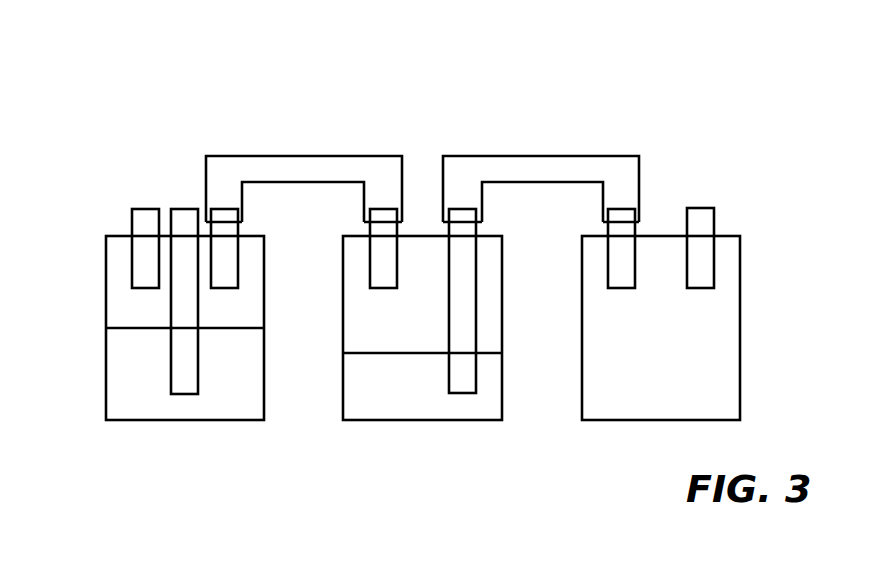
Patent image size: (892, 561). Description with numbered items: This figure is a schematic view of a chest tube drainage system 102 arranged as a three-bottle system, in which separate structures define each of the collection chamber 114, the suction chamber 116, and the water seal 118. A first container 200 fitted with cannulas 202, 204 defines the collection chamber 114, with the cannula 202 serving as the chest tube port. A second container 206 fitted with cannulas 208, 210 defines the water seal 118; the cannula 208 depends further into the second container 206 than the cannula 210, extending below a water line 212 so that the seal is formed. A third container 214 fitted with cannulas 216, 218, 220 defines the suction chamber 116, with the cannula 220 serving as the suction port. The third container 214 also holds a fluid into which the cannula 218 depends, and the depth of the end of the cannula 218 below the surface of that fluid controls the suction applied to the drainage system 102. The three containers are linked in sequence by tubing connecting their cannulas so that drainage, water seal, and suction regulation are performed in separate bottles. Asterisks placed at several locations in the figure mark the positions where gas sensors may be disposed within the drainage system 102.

The chest tube drainage system 102 is at (486, 92).
The collection chamber 114 is at (628, 401).
The suction chamber 116 is at (141, 406).
The water seal 118 is at (393, 401).
The first container 200 is at (728, 352).
The cannula 202 is at (707, 225).
The cannula 204 is at (617, 232).
The second container 206 is at (485, 332).
The cannula 208 is at (468, 279).
The cannula 210 is at (380, 278).
The water line 212 is at (362, 353).
The third container 214 is at (117, 297).
The cannula 216 is at (233, 230).
The cannula 218 is at (192, 214).
The cannula 220 is at (138, 217).